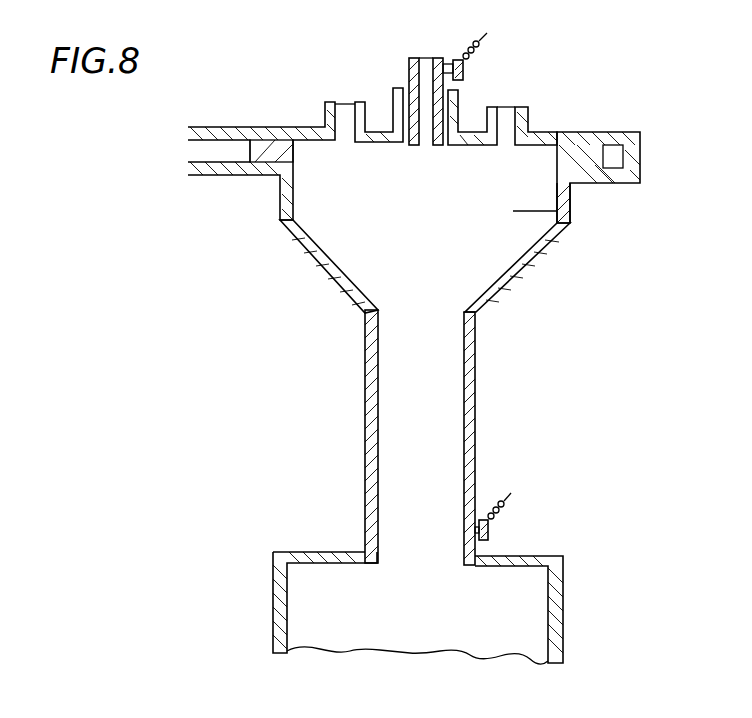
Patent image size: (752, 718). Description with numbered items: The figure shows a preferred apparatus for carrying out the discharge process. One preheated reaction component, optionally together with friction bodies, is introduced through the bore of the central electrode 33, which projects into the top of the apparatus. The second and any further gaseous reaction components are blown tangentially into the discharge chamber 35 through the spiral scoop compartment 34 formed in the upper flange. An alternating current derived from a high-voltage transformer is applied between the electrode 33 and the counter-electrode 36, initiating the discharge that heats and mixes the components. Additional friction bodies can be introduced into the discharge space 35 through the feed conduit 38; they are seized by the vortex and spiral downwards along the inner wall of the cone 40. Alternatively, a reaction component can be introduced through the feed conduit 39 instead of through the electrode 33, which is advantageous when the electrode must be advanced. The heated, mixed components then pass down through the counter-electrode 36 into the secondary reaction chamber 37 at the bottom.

The central electrode 33 is at (409, 73).
The spiral scoop compartment 34 is at (617, 152).
The discharge chamber 35 is at (568, 212).
The counter-electrode 36 is at (476, 385).
The secondary reaction chamber 37 is at (528, 604).
The feed conduit 38 is at (343, 118).
The feed conduit 39 is at (507, 125).
The cone 40 is at (528, 267).